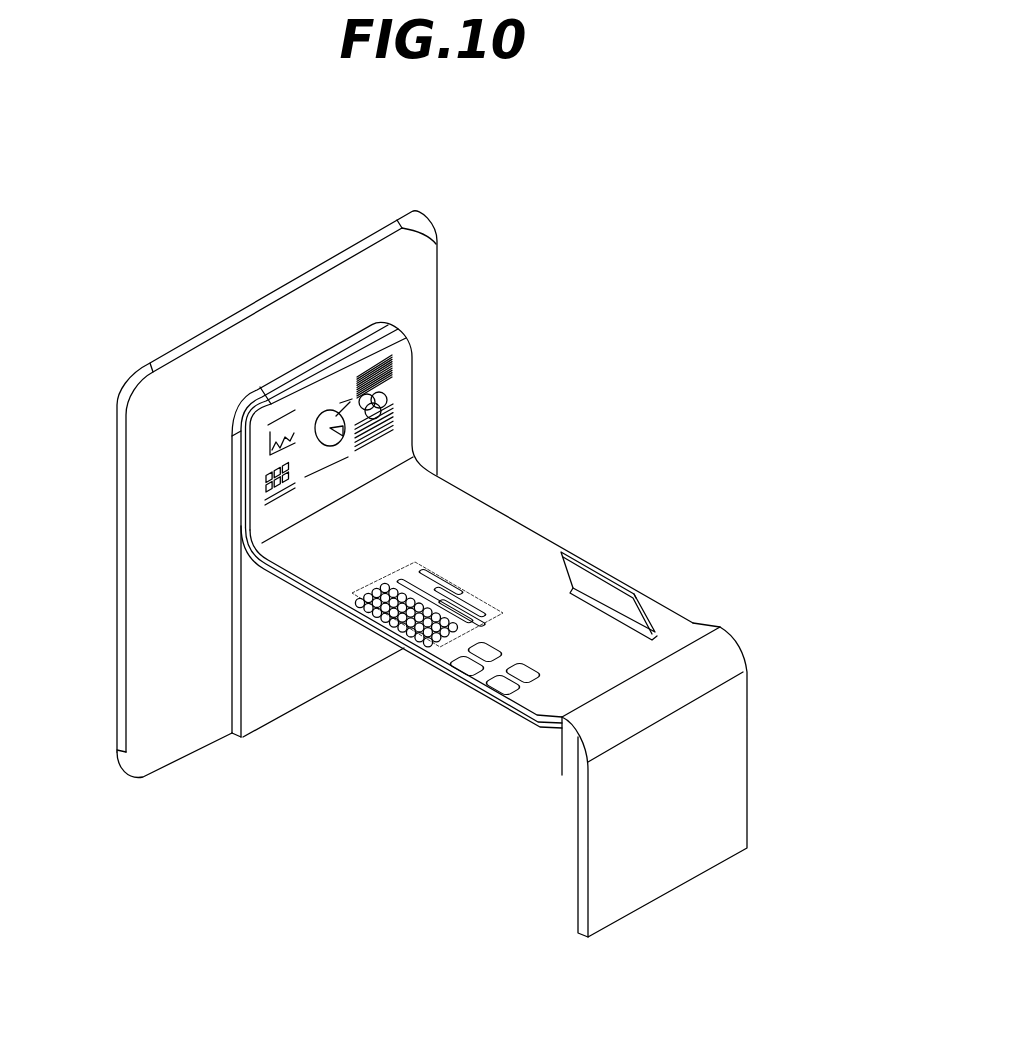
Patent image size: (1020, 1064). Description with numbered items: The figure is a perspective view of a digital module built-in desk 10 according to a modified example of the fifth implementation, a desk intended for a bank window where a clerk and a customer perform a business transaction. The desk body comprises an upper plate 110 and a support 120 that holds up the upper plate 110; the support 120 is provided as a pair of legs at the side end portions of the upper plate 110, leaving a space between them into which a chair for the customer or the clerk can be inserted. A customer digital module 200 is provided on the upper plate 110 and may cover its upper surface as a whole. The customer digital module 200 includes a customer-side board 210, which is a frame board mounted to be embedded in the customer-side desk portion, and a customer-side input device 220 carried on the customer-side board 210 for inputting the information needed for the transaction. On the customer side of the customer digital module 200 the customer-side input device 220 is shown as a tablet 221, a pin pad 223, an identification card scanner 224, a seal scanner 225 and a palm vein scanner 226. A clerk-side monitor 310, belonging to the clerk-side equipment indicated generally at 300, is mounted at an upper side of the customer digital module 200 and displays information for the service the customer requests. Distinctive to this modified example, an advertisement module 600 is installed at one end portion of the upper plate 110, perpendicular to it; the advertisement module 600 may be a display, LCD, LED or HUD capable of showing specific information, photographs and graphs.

The digital module built-in desk 10 is at (553, 150).
The upper plate 110 is at (555, 716).
The support 120 is at (607, 893).
The customer digital module 200 is at (290, 848).
The customer-side board 210 is at (513, 705).
The customer-side input device 220 is at (448, 797).
The tablet 221 is at (363, 614).
The pin pad 223 is at (450, 641).
The identification card scanner 224 is at (510, 676).
The seal scanner 225 is at (473, 663).
The palm vein scanner 226 is at (512, 692).
The holder 300 is at (690, 594).
The clerk-side monitor 310 is at (594, 588).
The advertisement module 600 is at (386, 404).